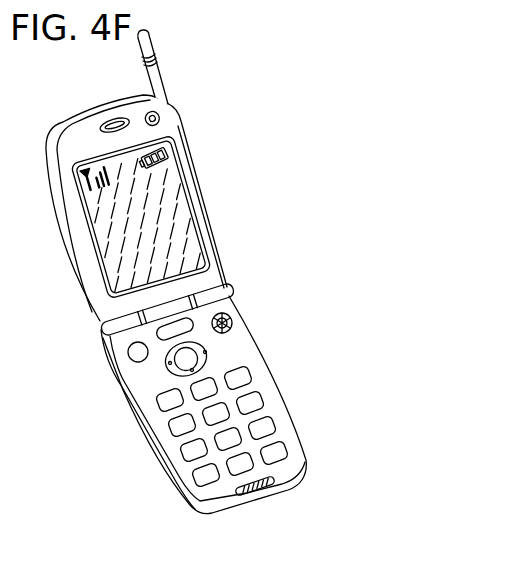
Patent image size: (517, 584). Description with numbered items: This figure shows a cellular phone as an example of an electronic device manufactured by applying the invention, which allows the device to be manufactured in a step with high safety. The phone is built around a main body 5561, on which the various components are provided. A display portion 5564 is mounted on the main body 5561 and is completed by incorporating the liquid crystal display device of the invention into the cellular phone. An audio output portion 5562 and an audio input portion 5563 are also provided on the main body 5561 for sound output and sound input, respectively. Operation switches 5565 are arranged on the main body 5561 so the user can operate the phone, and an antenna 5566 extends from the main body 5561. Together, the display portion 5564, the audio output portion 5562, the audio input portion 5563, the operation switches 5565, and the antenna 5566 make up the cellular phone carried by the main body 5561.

The main body 5561 is at (132, 379).
The audio output portion 5562 is at (178, 124).
The audio input portion 5563 is at (273, 478).
The display portion 5564 is at (157, 217).
The operation switches 5565 is at (224, 332).
The antenna 5566 is at (156, 70).